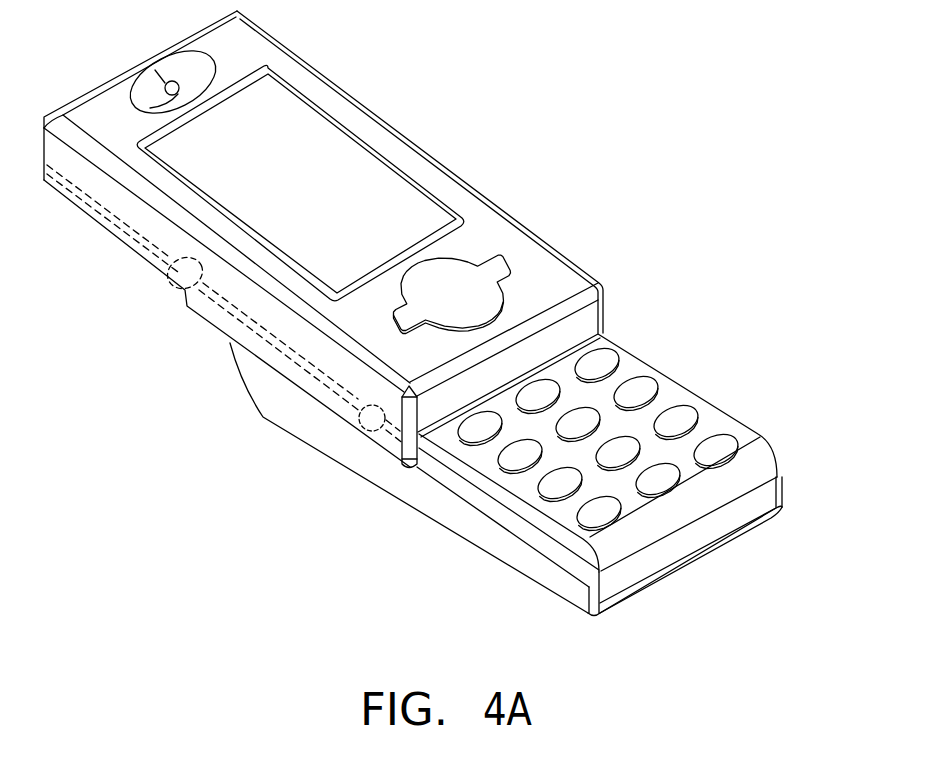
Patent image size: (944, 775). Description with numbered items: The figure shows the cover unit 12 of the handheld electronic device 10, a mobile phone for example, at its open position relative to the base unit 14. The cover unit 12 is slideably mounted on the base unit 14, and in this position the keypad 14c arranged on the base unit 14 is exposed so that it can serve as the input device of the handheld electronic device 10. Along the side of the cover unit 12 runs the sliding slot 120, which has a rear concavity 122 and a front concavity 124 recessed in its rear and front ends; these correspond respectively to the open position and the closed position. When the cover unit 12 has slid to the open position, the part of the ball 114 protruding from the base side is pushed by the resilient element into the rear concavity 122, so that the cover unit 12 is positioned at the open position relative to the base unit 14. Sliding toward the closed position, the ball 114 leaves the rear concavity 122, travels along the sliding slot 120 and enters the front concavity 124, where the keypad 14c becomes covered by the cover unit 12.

The handheld electronic device 10 is at (827, 621).
The cover unit 12 is at (492, 237).
The base unit 14 is at (690, 510).
The keypad 14c is at (692, 417).
The ball 114 is at (372, 432).
The sliding slot 120 is at (228, 343).
The rear concavity 122 is at (360, 440).
The front concavity 124 is at (185, 306).